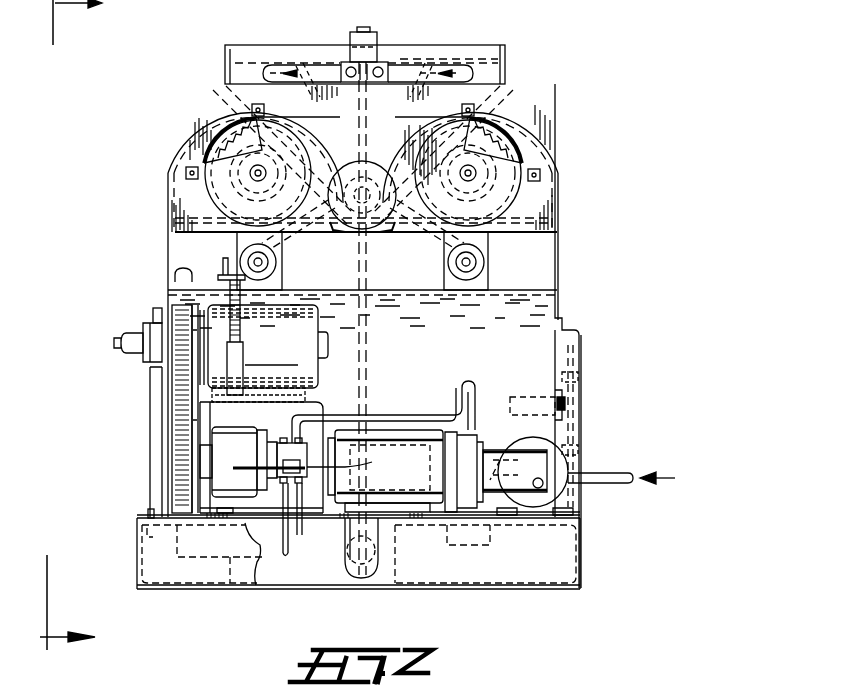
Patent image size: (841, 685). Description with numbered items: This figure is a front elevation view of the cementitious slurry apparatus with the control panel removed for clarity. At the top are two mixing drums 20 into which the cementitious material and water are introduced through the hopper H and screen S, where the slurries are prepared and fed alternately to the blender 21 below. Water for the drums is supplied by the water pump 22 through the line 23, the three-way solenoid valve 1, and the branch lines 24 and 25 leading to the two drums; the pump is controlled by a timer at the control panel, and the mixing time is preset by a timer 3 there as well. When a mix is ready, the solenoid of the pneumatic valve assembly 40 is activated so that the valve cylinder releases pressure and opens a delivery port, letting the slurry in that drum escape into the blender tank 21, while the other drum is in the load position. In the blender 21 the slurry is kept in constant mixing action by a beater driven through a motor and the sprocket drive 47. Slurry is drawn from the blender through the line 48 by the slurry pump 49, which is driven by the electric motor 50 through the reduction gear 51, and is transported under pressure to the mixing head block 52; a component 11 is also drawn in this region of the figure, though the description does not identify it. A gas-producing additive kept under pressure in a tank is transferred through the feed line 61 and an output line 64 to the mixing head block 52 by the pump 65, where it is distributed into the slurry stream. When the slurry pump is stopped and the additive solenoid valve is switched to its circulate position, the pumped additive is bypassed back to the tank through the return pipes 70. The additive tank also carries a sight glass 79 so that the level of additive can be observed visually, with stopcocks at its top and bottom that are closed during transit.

The three-way solenoid valve 1 is at (372, 40).
The timer 3 is at (122, 648).
The drive shaft 11 is at (331, 467).
The mixing drums 20 is at (215, 112).
The blender 21 is at (535, 315).
The water pump 22 is at (580, 452).
The line 23 is at (370, 340).
The branch line 24 is at (412, 60).
The branch line 25 is at (318, 62).
The pneumatic valve assembly 40 is at (280, 264).
The sprocket drive 47 is at (580, 375).
The line 48 is at (372, 580).
The slurry pump 49 is at (412, 430).
The electric motor 50 is at (178, 270).
The reduction gear 51 is at (238, 470).
The mixing head block 52 is at (478, 497).
The feed line 61 is at (148, 514).
The output line 64 is at (377, 428).
The pump 65 is at (304, 442).
The return pipes 70 is at (230, 583).
The sight glass 79 is at (152, 382).
The hopper H is at (505, 48).
The screen S is at (468, 62).